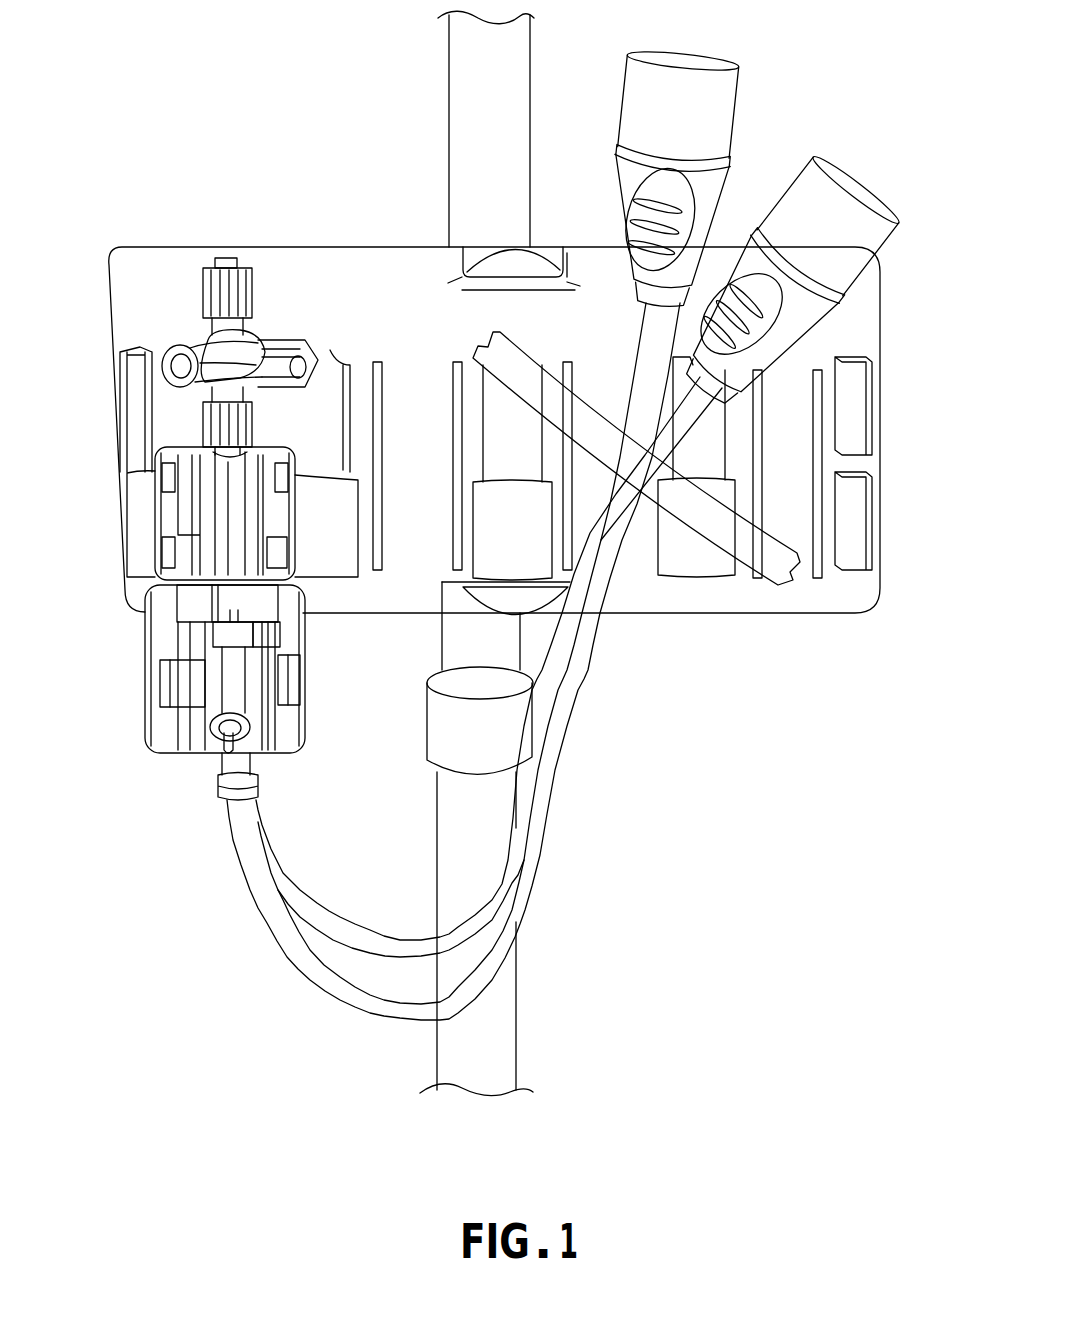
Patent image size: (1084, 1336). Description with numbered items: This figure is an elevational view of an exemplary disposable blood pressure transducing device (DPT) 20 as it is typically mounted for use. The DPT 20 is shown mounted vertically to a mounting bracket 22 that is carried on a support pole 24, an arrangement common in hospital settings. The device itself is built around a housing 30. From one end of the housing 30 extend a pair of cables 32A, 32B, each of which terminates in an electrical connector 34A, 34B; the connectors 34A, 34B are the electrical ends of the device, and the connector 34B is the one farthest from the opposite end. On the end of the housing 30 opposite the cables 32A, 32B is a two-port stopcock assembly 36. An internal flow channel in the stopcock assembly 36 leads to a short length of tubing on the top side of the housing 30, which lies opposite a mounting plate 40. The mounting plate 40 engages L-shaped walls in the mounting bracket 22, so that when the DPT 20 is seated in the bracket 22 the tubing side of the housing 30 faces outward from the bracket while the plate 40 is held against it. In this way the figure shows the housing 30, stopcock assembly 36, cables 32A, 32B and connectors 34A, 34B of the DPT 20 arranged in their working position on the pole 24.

The disposable blood pressure transducing device 20 is at (184, 852).
The mounting bracket 22 is at (367, 297).
The support pole 24 is at (452, 130).
The housing 30 is at (173, 641).
The cable 32A is at (317, 903).
The cable 32B is at (292, 973).
The electrical connector 34A is at (857, 177).
The electrical connector 34B is at (737, 100).
The two-port stopcock assembly 36 is at (178, 328).
The mounting plate 40 is at (145, 723).